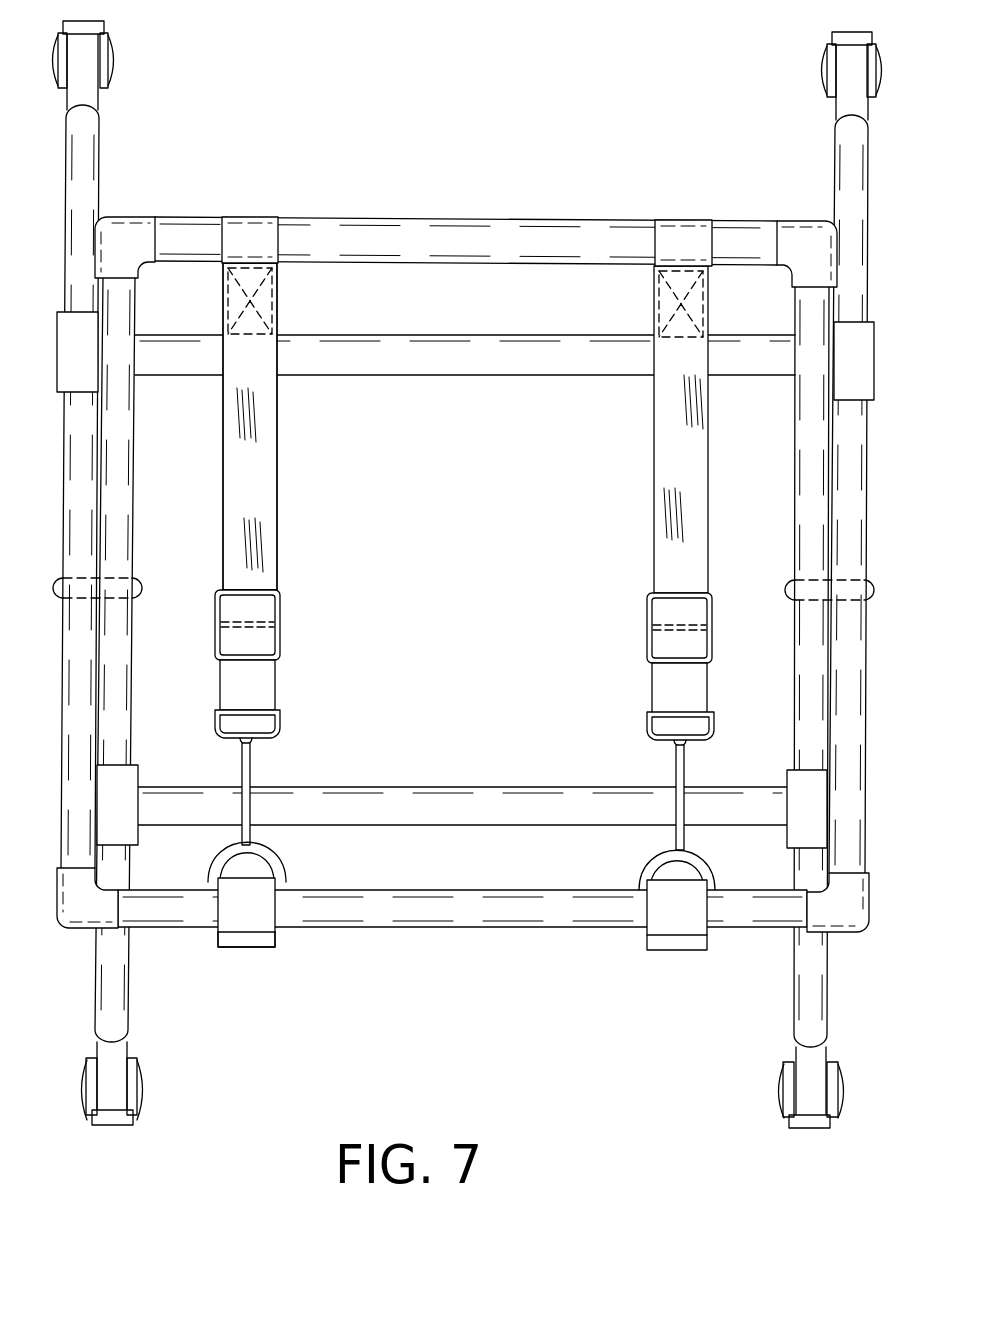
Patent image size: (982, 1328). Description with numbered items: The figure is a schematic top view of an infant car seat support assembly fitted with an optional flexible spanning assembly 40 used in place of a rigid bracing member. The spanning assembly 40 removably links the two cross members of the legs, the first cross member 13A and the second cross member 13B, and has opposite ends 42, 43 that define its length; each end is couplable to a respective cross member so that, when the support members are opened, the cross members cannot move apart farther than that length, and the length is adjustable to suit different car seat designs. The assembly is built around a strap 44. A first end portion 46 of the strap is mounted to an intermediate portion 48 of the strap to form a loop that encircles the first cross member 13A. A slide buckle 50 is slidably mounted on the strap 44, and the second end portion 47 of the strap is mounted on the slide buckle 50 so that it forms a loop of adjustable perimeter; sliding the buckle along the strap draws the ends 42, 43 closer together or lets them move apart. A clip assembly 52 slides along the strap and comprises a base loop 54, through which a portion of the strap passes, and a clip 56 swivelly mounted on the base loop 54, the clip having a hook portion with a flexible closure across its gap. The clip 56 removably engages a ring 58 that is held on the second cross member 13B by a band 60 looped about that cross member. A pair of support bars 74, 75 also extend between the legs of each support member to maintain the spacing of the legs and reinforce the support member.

The first cross member 13A is at (367, 237).
The second cross member 13B is at (380, 921).
The spanning assembly 40 is at (342, 462).
The end of spanning assembly 42 is at (240, 217).
The end of spanning assembly 43 is at (258, 922).
The strap 44 is at (265, 455).
The first end portion 46 is at (247, 295).
The second end portion 47 is at (258, 686).
The intermediate portion 48 is at (275, 370).
The slide buckle 50 is at (283, 598).
The clip assembly 52 is at (222, 757).
The base loop 54 is at (280, 722).
The clip 56 is at (250, 790).
The ring 58 is at (285, 866).
The band 60 is at (247, 948).
The support bar 74 is at (455, 355).
The support bar 75 is at (452, 805).